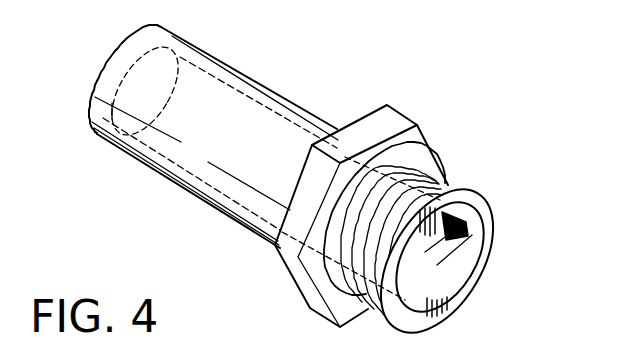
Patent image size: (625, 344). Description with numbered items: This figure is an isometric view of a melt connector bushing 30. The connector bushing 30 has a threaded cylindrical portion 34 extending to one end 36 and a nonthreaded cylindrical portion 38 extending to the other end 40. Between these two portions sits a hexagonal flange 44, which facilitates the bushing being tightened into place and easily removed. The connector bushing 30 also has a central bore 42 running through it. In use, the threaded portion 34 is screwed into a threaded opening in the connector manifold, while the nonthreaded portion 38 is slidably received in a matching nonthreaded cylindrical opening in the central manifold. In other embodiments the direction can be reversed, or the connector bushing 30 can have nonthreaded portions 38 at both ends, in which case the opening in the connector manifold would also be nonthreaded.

The connector bushing 30 is at (522, 207).
The threaded cylindrical portion 34 is at (432, 180).
The one end 36 is at (481, 253).
The nonthreaded cylindrical portion 38 is at (250, 71).
The other end 40 is at (113, 56).
The central bore 42 is at (434, 277).
The hexagonal flange 44 is at (389, 122).